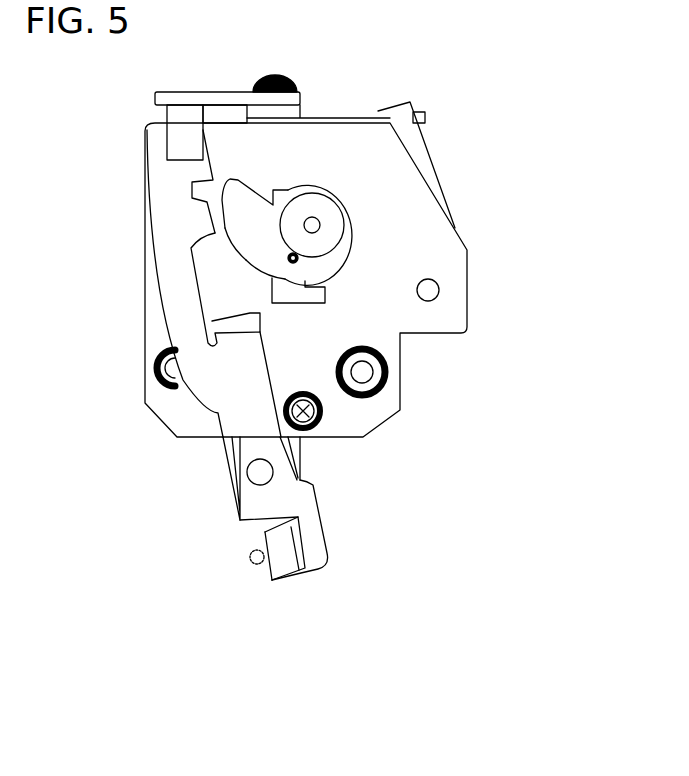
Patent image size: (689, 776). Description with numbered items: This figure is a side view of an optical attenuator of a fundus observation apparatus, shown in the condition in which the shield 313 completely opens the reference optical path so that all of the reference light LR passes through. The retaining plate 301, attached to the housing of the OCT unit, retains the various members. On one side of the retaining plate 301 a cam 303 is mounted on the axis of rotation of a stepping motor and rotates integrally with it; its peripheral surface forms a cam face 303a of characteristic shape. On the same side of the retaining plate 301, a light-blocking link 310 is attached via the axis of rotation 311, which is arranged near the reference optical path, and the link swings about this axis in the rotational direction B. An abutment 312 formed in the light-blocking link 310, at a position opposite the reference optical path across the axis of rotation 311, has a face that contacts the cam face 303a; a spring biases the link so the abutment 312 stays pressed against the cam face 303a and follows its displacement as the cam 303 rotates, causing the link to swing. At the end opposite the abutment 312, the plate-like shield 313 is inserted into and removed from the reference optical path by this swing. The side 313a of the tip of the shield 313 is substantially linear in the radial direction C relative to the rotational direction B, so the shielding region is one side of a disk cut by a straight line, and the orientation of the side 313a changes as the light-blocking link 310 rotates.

The retaining plate 301 is at (460, 288).
The cam 303 is at (348, 232).
The cam face 303a is at (226, 249).
The light-blocking link 310 is at (171, 162).
The axis of rotation 311 is at (247, 471).
The abutment 312 is at (207, 202).
The shield 313 is at (285, 565).
The side of the tip 313a is at (265, 576).
The reference light LR is at (250, 555).
The radial direction C is at (135, 577).
The rotational direction B is at (372, 622).